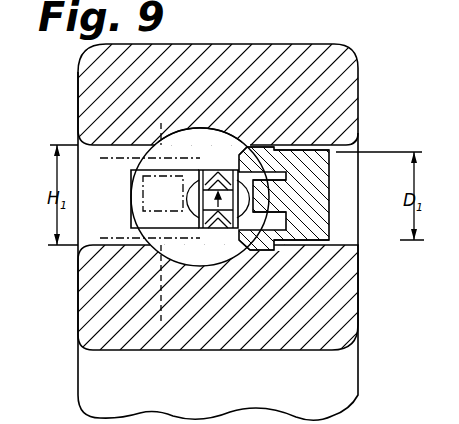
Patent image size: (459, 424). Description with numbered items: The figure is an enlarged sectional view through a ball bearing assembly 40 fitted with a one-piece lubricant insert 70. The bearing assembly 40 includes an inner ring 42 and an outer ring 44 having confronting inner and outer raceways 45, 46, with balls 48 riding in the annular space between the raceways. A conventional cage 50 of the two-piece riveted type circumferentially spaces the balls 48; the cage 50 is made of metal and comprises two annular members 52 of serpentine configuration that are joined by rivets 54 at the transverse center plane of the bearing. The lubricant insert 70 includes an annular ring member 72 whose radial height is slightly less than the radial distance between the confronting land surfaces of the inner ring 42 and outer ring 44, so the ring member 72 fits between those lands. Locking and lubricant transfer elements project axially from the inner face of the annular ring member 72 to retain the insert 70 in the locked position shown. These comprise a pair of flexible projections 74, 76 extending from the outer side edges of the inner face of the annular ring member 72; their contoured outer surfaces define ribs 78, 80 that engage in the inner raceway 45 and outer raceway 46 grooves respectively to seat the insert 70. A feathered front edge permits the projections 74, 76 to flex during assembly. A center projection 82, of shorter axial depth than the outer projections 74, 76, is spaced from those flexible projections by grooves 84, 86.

The bearing assembly 40 is at (346, 53).
The inner ring 42 is at (88, 290).
The outer ring 44 is at (90, 103).
The inner raceway 45 is at (200, 256).
The outer raceway 46 is at (206, 128).
The balls 48 is at (228, 152).
The cage 50 is at (140, 166).
The annular members 52 is at (145, 180).
The rivets 54 is at (193, 195).
The lubricant insert 70 is at (327, 199).
The annular ring member 72 is at (306, 243).
The flexible projection 74 is at (246, 146).
The flexible projection 76 is at (247, 244).
The rib 78 is at (308, 112).
The rib 80 is at (272, 248).
The center projection 82 is at (253, 208).
The groove 84 is at (305, 144).
The groove 86 is at (332, 250).